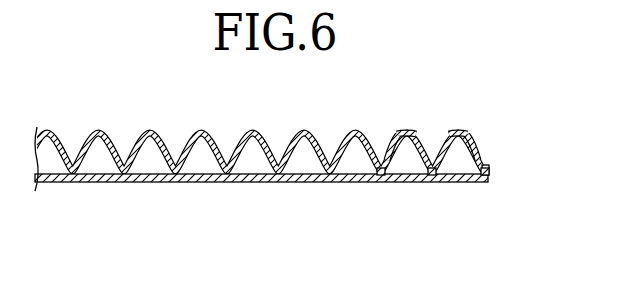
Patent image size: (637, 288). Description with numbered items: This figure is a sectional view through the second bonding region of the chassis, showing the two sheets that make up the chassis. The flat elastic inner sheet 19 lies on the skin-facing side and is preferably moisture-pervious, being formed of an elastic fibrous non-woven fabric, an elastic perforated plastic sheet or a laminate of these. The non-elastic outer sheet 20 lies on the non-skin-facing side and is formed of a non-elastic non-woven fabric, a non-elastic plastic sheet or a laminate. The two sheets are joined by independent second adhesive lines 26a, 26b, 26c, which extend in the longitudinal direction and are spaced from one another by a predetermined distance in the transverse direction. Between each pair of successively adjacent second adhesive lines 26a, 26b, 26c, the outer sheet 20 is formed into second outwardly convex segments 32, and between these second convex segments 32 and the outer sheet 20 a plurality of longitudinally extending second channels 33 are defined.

The inner sheet 19 is at (142, 184).
The outer sheet 20 is at (150, 131).
The second outwardly convex segments 32 is at (405, 130).
The second channels 33 is at (400, 143).
The second adhesive line 26a is at (485, 187).
The second adhesive line 26b is at (432, 187).
The second adhesive line 26c is at (382, 187).